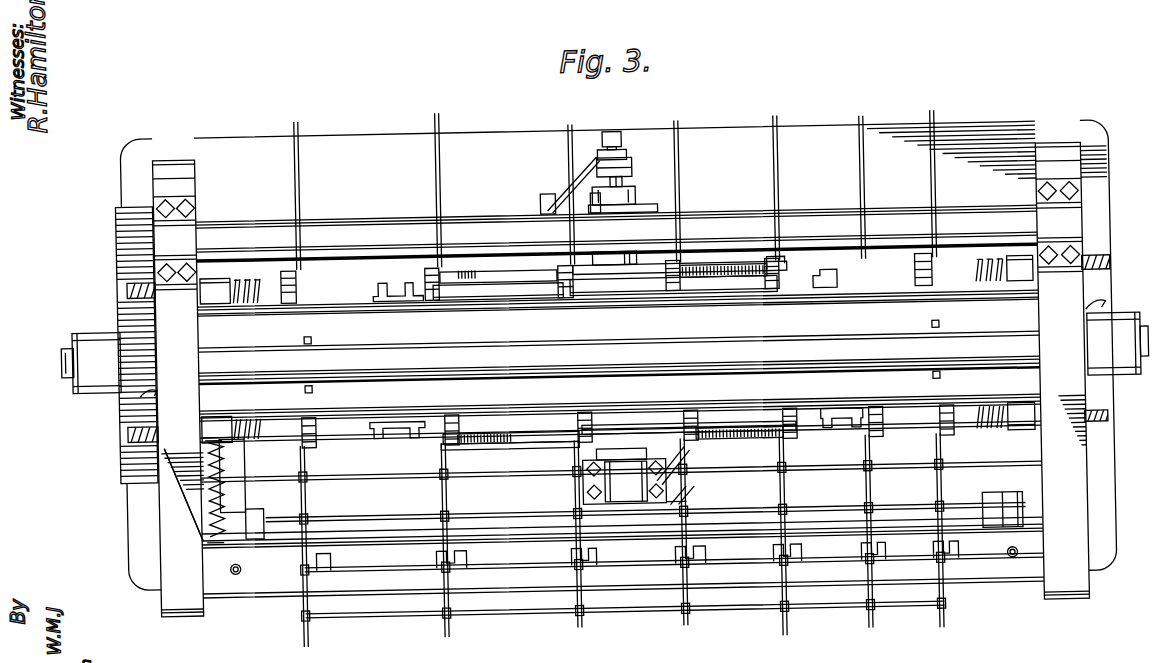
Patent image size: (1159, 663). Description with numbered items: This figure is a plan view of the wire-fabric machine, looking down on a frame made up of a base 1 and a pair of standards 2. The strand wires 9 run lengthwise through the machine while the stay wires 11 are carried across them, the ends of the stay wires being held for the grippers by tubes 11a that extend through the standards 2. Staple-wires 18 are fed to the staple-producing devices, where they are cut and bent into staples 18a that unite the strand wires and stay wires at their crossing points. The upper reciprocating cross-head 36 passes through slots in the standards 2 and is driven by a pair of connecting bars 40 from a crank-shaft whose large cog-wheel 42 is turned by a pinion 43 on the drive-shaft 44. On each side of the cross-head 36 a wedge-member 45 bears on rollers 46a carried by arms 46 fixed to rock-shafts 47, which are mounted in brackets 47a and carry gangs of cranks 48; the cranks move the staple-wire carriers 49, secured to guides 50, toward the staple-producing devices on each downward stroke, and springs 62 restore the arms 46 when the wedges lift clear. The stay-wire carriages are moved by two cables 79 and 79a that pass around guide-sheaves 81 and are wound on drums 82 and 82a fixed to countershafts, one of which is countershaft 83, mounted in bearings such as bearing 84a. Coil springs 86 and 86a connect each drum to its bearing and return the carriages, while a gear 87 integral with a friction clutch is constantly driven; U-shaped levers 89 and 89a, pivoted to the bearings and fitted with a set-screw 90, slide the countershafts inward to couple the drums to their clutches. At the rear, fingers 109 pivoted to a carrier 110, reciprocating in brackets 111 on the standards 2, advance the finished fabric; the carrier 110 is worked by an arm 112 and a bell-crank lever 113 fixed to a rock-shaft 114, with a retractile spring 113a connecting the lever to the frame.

The base 1 is at (499, 131).
The standards 2 is at (180, 152).
The strand wires 9 is at (303, 128).
The stay wires 11 is at (540, 564).
The tubes 11a is at (1097, 316).
The staple-wires 18 is at (934, 203).
The staples 18a is at (790, 616).
The upper reciprocating cross-head 36 is at (619, 366).
The connecting bars 40 is at (101, 323).
The large cog-wheel 42 is at (132, 445).
The pinion 43 is at (121, 215).
The drive-shaft 44 is at (230, 203).
The wedge-members 45 is at (398, 297).
The arms 46 is at (430, 426).
The rollers 46a is at (391, 278).
The rock-shafts 47 is at (342, 293).
The brackets 47a is at (224, 270).
The cranks 48 is at (921, 266).
The staple-wire carriers 49 is at (300, 272).
The guides 50 is at (427, 267).
The springs 62 is at (250, 300).
The cable 79 is at (725, 267).
The cable 79a is at (512, 432).
The guide-sheaves 81 is at (129, 271).
The drum 82 is at (468, 268).
The drum 82a is at (527, 436).
The countershaft 83 is at (630, 184).
The bearing 84a is at (624, 476).
The coil spring 86 is at (655, 264).
The coil spring 86a is at (564, 443).
The gear 87 is at (644, 208).
The U-shaped lever 89 is at (636, 165).
The U-shaped lever 89a is at (680, 503).
The set-screw 90 is at (615, 132).
The fingers 109 is at (430, 563).
The carrier 110 is at (274, 589).
The brackets 111 is at (182, 608).
The arm 112 is at (1004, 518).
The bell-crank lever 113 is at (241, 481).
The retractile spring 113a is at (182, 518).
The rock-shaft 114 is at (350, 509).